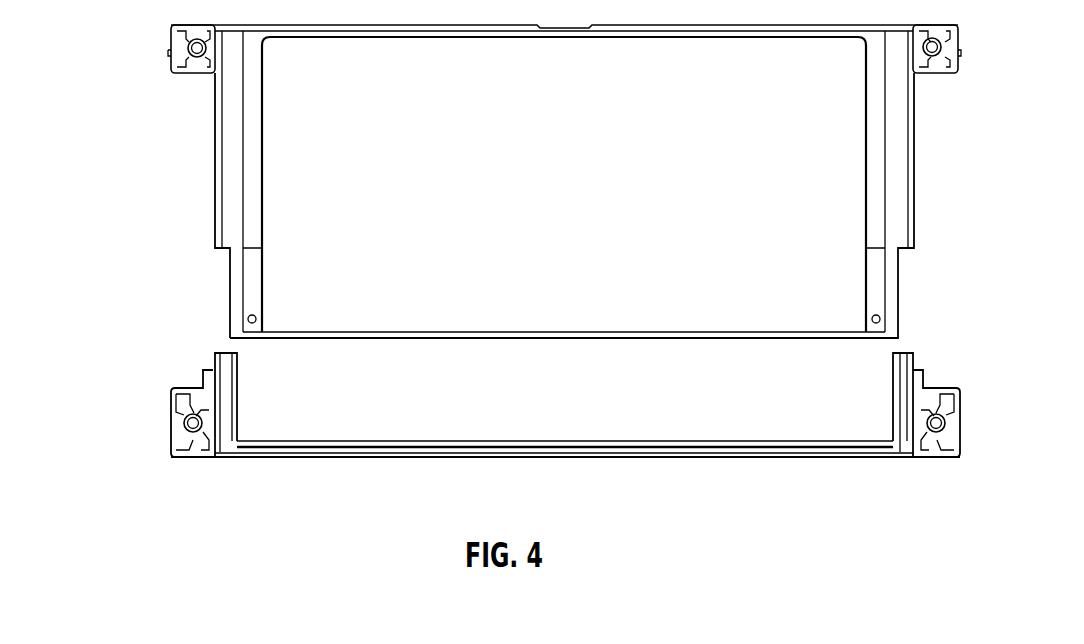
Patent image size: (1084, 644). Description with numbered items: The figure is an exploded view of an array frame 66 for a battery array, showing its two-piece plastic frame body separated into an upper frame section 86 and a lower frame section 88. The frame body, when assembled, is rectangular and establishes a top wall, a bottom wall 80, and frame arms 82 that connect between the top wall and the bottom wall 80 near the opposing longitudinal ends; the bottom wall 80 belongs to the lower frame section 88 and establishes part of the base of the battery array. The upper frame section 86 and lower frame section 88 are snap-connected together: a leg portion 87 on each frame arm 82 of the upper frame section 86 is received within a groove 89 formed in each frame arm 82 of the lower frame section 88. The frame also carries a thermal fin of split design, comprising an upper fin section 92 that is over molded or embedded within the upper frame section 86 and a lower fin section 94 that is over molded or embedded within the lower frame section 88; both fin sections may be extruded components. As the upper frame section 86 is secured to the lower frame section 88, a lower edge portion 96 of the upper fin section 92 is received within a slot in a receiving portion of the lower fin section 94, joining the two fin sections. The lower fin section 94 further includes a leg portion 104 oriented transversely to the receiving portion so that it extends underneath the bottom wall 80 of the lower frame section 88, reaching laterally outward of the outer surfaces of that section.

The array frame 66 is at (110, 27).
The bottom wall 80 is at (580, 445).
The frame arms 82 is at (243, 210).
The upper frame section 86 is at (231, 145).
The leg portion 87 is at (235, 298).
The lower frame section 88 is at (174, 424).
The groove 89 is at (237, 385).
The upper fin section 92 is at (370, 318).
The lower fin section 94 is at (423, 454).
The lower edge portion 96 is at (523, 338).
The leg portion 104 is at (510, 455).